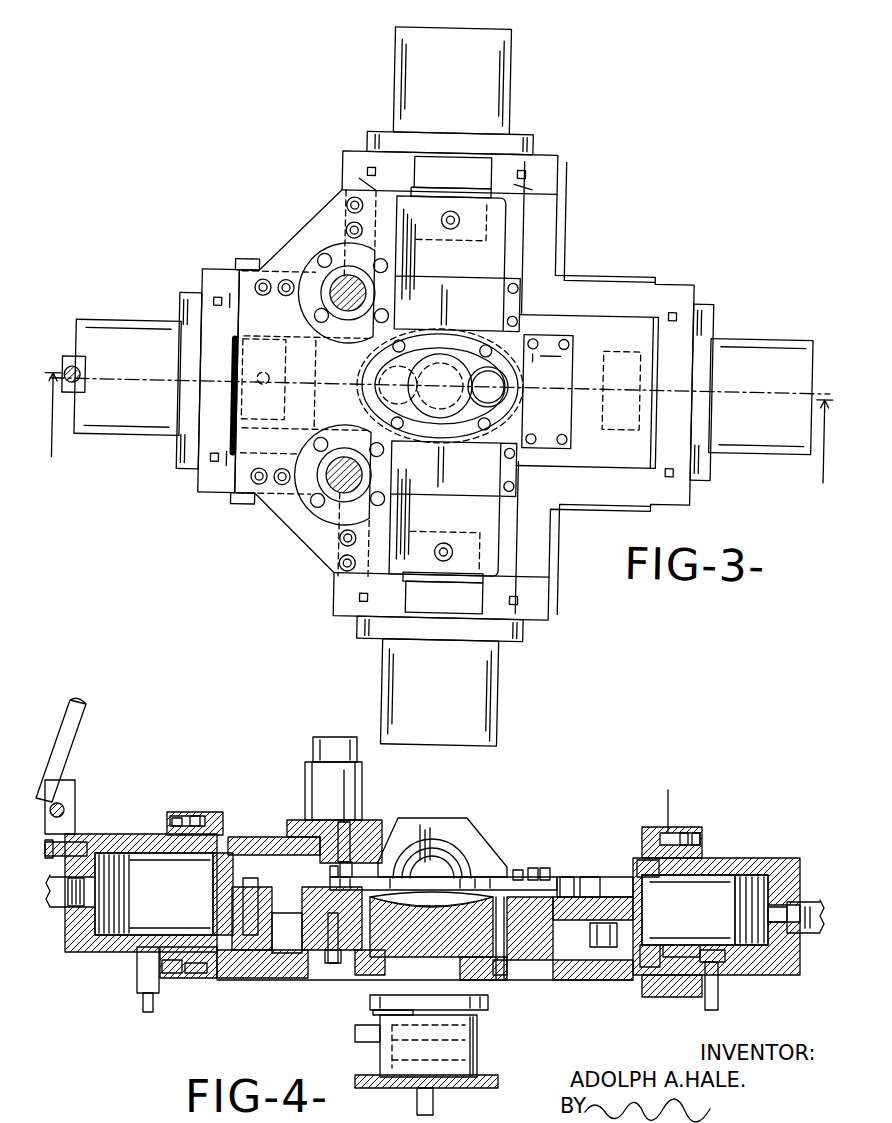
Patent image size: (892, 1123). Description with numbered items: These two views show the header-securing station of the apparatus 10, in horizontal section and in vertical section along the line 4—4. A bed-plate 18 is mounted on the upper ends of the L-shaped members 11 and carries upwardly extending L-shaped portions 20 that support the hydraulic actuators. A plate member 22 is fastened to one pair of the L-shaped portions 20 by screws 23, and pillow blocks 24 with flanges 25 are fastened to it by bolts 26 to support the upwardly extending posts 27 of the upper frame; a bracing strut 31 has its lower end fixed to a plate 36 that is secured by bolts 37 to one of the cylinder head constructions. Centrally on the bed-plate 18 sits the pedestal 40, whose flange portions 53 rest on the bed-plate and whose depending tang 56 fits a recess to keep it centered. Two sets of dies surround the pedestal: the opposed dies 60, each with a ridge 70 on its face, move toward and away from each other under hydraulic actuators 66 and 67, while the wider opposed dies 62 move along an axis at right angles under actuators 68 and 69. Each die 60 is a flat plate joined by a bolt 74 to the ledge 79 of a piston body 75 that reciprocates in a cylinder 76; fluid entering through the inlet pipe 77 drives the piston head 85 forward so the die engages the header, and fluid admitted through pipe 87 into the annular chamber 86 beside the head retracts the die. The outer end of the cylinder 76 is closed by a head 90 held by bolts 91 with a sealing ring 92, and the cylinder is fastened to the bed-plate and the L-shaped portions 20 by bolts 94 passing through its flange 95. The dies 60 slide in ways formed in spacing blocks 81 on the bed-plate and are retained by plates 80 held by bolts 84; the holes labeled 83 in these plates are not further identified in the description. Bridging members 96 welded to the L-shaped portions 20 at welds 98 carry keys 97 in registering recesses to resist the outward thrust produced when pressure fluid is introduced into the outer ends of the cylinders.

In FIG. 3, the section line 4- 4 is at (438, 428).
In FIG. 3, the power unit 10 is at (648, 267).
In FIG. 3, the L-shaped members 11 is at (612, 272).
In FIG. 4, the bed-plate 18 is at (270, 982).
In FIG. 3, the L-shaped portions 20 is at (228, 266).
In FIG. 3, the plate member 22 is at (333, 210).
In FIG. 3, the screws 23 is at (347, 203).
In FIG. 3, the pillow blocks 24 is at (318, 278).
In FIG. 4, the pillow blocks 24 is at (310, 776).
In FIG. 3, the flanges 25 is at (340, 247).
In FIG. 4, the flanges 25 is at (300, 822).
In FIG. 3, the bolts 26 is at (330, 243).
In FIG. 4, the bolts 26 is at (344, 820).
In FIG. 3, the posts 27 is at (330, 300).
In FIG. 4, the posts 27 is at (318, 747).
In FIG. 4, the bracing strut 31 is at (88, 712).
In FIG. 4, the plate 36 is at (60, 832).
In FIG. 4, the bolts 37 is at (66, 814).
In FIG. 3, the pedestal 40 is at (452, 348).
In FIG. 4, the pedestal 40 is at (528, 958).
In FIG. 4, the flange portions 53 is at (335, 970).
In FIG. 4, the depending tang 56 is at (373, 1002).
In FIG. 3, the dies 60 is at (240, 346).
In FIG. 4, the dies 60 is at (436, 881).
In FIG. 3, the dies 62 is at (500, 231).
In FIG. 4, the dies 62 is at (448, 900).
In FIG. 3, the hydraulic actuator 66 is at (118, 326).
In FIG. 4, the hydraulic actuator 66 is at (117, 953).
In FIG. 3, the hydraulic actuator 67 is at (805, 340).
In FIG. 4, the hydraulic actuator 67 is at (788, 979).
In FIG. 3, the hydraulic actuator 68 is at (506, 681).
In FIG. 3, the hydraulic actuator 69 is at (516, 67).
In FIG. 4, the ridge 70 is at (305, 972).
In FIG. 3, the bolt 74 is at (447, 230).
In FIG. 4, the bolt 74 is at (597, 872).
In FIG. 3, the piston body 75 is at (490, 198).
In FIG. 4, the piston body 75 is at (148, 860).
In FIG. 4, the cylinder 76 is at (140, 855).
In FIG. 4, the inlet pipe 77 is at (62, 945).
In FIG. 4, the ledge 79 is at (590, 936).
In FIG. 3, the plates 80 is at (565, 410).
In FIG. 4, the plates 80 is at (353, 877).
In FIG. 4, the spacing blocks 81 is at (540, 985).
In FIG. 3, the screws 83 is at (534, 342).
In FIG. 3, the bolts 84 is at (535, 346).
In FIG. 4, the bolts 84 is at (346, 862).
In FIG. 4, the piston head 85 is at (132, 932).
In FIG. 4, the annular chamber 86 is at (138, 968).
In FIG. 4, the pipe 87 is at (148, 1010).
In FIG. 4, the head 90 is at (233, 843).
In FIG. 4, the bolts 91 is at (205, 965).
In FIG. 4, the sealing ring 92 is at (183, 836).
In FIG. 4, the bolts 94 is at (180, 833).
In FIG. 4, the flange 95 is at (195, 815).
In FIG. 3, the bridging members 96 is at (508, 150).
In FIG. 4, the bridging members 96 is at (206, 812).
In FIG. 3, the keys 97 is at (368, 169).
In FIG. 3, the welds 98 is at (366, 185).